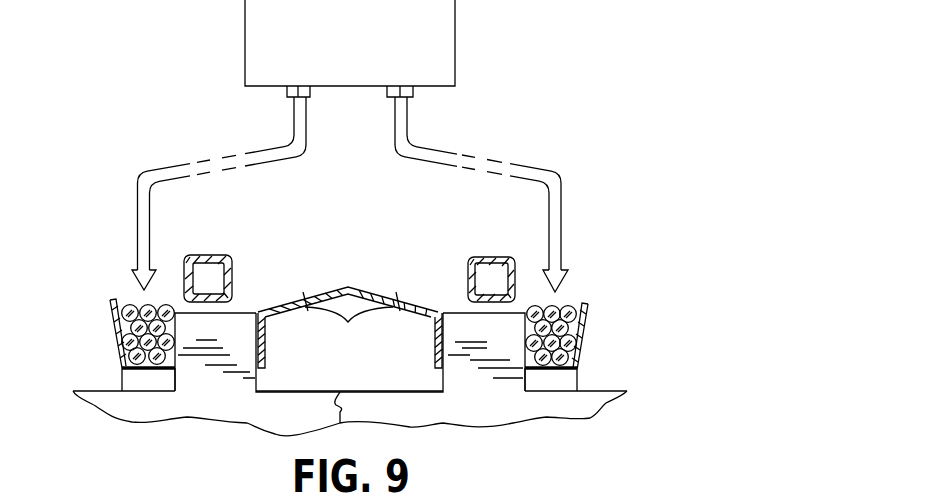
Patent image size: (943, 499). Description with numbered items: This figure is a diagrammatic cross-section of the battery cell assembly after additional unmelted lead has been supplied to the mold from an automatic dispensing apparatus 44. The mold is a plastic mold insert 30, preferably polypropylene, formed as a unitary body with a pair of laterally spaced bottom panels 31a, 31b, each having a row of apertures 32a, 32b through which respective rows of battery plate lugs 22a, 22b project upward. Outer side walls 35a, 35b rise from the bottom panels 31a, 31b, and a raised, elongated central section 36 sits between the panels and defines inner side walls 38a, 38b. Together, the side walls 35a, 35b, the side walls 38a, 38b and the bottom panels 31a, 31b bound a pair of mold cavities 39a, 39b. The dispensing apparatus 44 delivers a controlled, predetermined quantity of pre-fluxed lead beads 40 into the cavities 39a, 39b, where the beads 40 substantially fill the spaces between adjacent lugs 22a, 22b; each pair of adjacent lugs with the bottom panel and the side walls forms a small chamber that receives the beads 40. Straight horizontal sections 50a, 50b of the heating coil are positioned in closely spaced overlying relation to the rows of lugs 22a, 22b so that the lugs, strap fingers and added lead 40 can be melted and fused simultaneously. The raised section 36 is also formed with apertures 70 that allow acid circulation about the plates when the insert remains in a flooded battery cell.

The automatic dispensing apparatus 44 is at (244, 42).
The mold cavity 39b is at (118, 285).
The mold cavity 39a is at (578, 291).
The horizontal section of coil 50b is at (206, 255).
The horizontal section of coil 50a is at (492, 257).
The battery plate lugs 22b is at (240, 328).
The battery plate lugs 22a is at (467, 323).
The plastic mold insert 30 is at (340, 284).
The raised central section 36 is at (373, 297).
The apertures 70 is at (349, 330).
The side wall 38b is at (266, 348).
The side wall 38a is at (436, 348).
The outer side wall 35b is at (117, 349).
The outer side wall 35a is at (590, 323).
The lead beads 40 is at (128, 342).
The apertures 32b is at (175, 370).
The apertures 32a is at (525, 368).
The bottom panel 31b is at (143, 371).
The bottom panel 31a is at (563, 373).